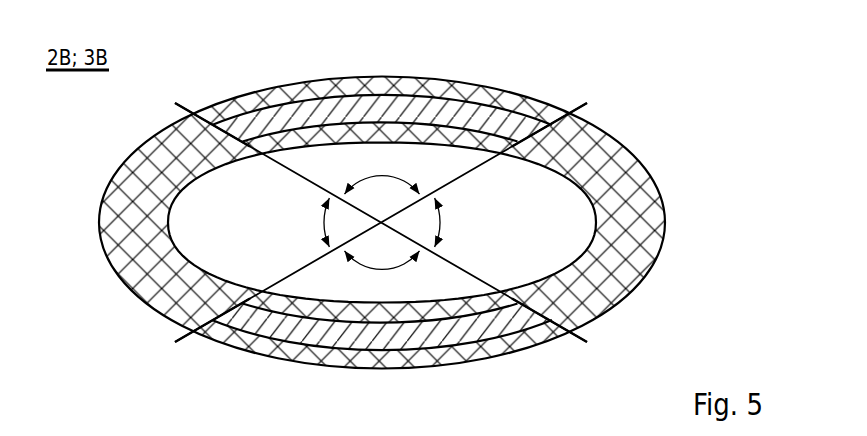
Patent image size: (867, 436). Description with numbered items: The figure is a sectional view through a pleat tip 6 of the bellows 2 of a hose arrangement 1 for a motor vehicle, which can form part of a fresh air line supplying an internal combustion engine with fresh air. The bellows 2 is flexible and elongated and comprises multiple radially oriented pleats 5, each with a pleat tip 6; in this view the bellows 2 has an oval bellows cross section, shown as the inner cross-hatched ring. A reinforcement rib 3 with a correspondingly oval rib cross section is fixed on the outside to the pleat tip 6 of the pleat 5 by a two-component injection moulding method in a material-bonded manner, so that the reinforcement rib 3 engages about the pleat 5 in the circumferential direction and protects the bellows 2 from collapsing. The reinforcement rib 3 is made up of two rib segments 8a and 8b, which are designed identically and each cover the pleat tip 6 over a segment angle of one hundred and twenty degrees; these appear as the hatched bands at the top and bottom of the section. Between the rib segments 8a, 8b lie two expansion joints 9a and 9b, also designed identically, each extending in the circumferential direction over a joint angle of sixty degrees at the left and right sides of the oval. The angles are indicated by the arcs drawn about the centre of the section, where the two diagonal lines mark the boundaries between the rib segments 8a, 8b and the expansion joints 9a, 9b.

The hose arrangement 1 is at (708, 130).
The bellows 2 is at (610, 93).
The reinforcement rib 3 is at (468, 101).
The pleat 5 is at (273, 88).
The pleat tip 6 is at (230, 112).
The rib segment 8a is at (386, 107).
The rib segment 8b is at (378, 341).
The expansion joint 9a is at (620, 220).
The expansion joint 9b is at (133, 221).